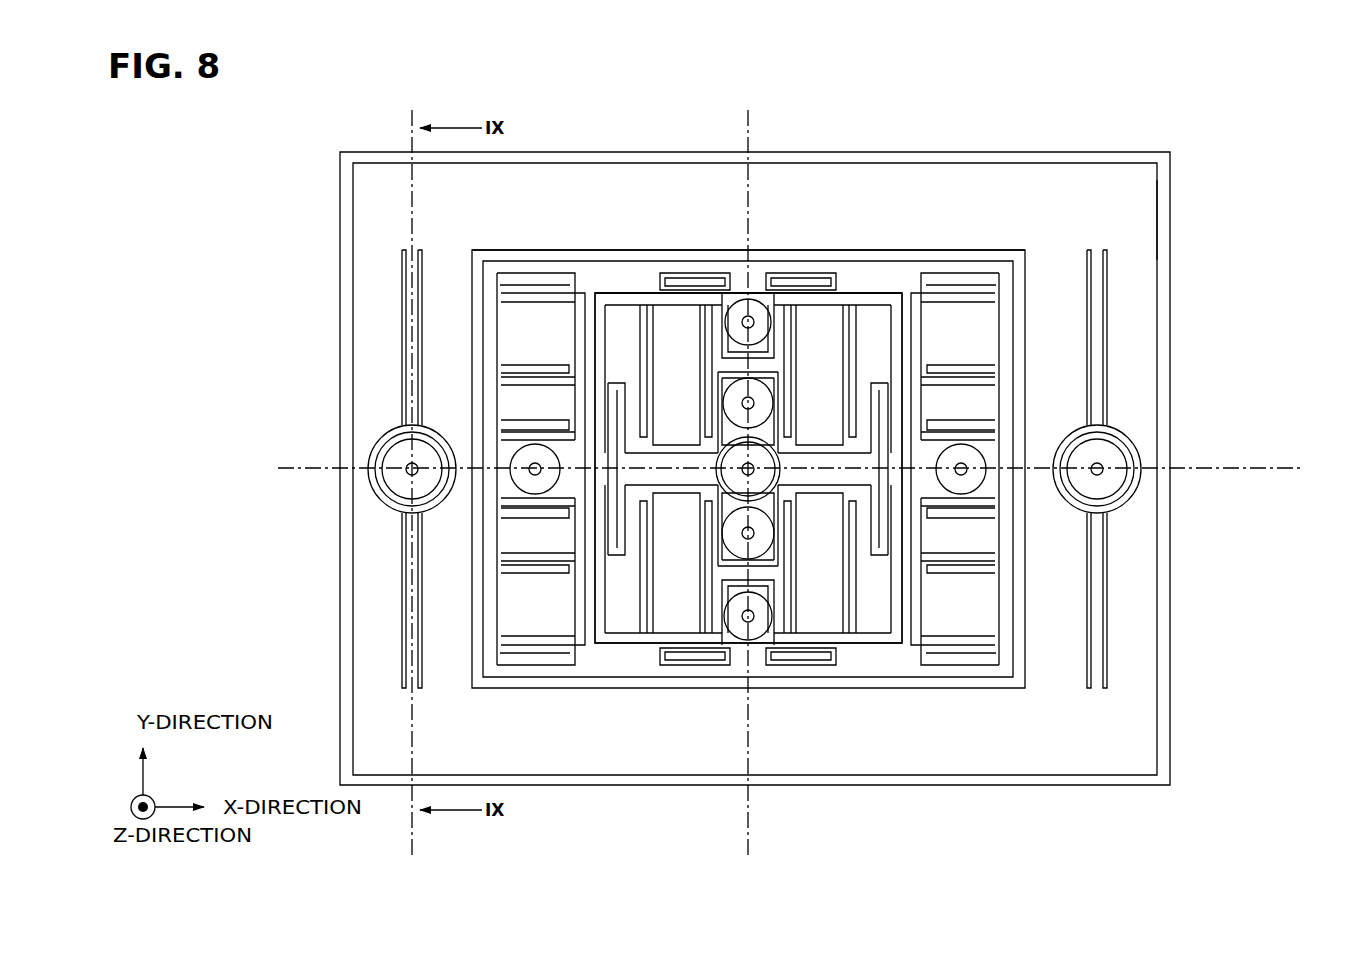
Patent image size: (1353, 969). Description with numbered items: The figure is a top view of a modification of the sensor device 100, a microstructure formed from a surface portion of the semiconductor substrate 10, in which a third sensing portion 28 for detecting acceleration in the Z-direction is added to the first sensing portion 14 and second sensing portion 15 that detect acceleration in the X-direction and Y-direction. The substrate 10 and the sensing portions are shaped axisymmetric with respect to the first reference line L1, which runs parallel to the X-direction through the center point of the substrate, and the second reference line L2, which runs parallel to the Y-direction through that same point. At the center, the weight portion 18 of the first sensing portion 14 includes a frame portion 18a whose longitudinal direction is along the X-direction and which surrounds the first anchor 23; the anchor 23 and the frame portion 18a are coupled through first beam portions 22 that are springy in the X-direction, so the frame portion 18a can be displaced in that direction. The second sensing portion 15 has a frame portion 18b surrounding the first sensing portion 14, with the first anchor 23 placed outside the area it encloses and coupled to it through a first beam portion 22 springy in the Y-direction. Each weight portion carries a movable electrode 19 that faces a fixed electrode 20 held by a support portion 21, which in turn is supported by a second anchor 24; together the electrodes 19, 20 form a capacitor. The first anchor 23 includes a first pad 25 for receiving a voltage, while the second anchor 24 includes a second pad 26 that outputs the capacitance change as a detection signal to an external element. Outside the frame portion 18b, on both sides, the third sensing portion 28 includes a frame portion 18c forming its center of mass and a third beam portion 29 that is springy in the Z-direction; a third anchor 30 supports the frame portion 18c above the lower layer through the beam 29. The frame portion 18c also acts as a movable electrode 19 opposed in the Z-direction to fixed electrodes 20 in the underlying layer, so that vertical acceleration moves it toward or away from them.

The semiconductor substrate 10 is at (1125, 152).
The first sensing portion 14 is at (879, 289).
The second sensing portion 15 is at (971, 252).
The weight portion 18 is at (900, 295).
The frame portion 18a is at (650, 290).
The frame portion 18b is at (580, 262).
The frame portion 18c is at (1148, 222).
The movable electrode 19 is at (513, 283).
The fixed electrode 20 is at (540, 281).
The support portion 21 is at (837, 440).
The first beam portion 22 is at (820, 277).
The first anchor 23 is at (680, 457).
The second anchor 24 is at (730, 557).
The first pad 25 is at (752, 318).
The second pad 26 is at (748, 535).
The third sensing portion 28 is at (1078, 158).
The third beam portion 29 is at (1097, 273).
The third anchor 30 is at (392, 445).
The sensor device 100 is at (1307, 133).
The first reference line L1 is at (1258, 467).
The second reference line L2 is at (750, 800).